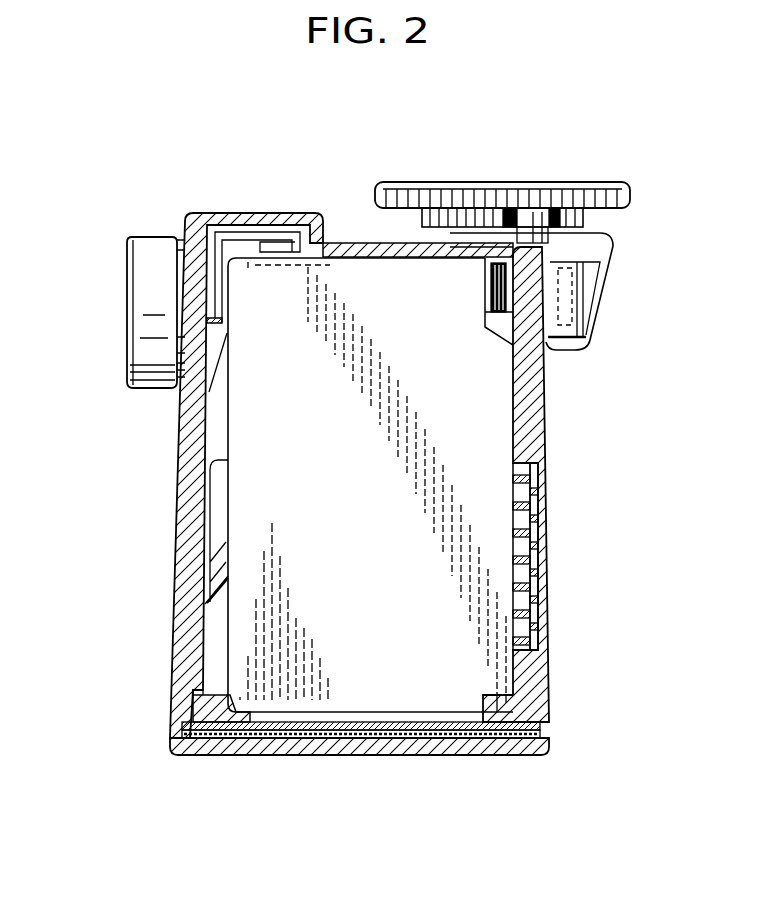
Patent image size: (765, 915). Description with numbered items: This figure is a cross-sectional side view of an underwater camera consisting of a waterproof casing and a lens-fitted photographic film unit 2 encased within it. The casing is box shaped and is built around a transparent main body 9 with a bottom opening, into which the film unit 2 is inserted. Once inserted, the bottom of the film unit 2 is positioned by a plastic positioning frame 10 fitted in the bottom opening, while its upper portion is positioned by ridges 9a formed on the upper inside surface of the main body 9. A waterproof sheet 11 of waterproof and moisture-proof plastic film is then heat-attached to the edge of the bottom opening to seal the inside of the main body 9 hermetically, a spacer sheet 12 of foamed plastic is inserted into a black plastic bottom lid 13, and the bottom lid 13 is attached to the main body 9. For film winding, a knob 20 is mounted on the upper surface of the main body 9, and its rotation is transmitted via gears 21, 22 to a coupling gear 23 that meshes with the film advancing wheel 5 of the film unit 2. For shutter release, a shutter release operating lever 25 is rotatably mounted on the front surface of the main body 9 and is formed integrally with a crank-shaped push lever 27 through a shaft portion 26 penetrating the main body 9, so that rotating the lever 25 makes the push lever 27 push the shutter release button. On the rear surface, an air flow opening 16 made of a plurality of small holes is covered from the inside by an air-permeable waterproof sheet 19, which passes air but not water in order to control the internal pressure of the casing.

The lens-fitted photographic film unit 2 is at (245, 437).
The film advancing wheel 5 is at (487, 295).
The transparent main body 9 is at (533, 670).
The ridges 9a is at (210, 367).
The positioning frame 10 is at (212, 692).
The waterproof sheet 11 is at (278, 738).
The spacer sheet 12 is at (378, 740).
The bottom lid 13 is at (483, 746).
The air flow opening 16 is at (548, 540).
The air-permeable waterproof sheet 19 is at (512, 492).
The knob 20 is at (450, 182).
The gear 21 is at (583, 215).
The gear 22 is at (530, 210).
The coupling gear 23 is at (485, 267).
The shutter release operating lever 25 is at (127, 300).
The shaft portion 26 is at (207, 303).
The push lever 27 is at (272, 240).